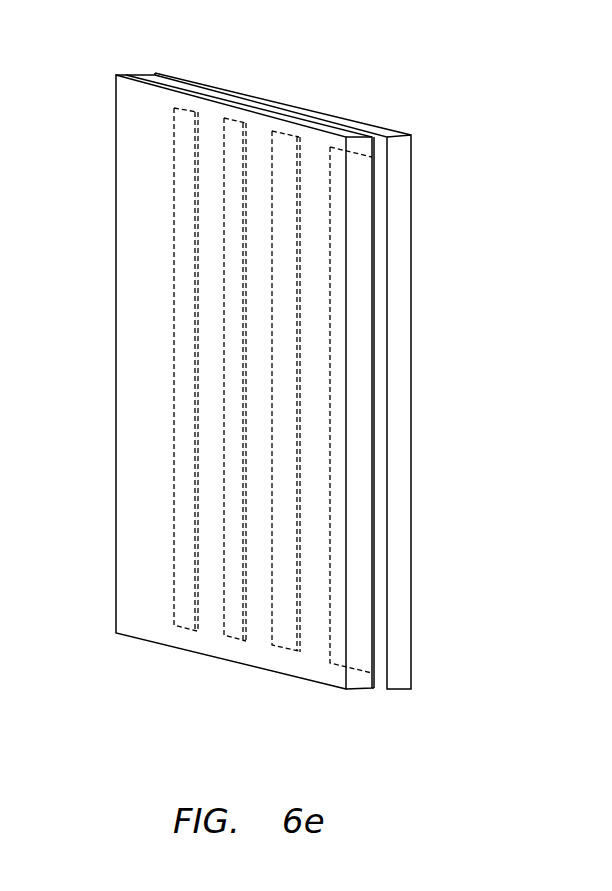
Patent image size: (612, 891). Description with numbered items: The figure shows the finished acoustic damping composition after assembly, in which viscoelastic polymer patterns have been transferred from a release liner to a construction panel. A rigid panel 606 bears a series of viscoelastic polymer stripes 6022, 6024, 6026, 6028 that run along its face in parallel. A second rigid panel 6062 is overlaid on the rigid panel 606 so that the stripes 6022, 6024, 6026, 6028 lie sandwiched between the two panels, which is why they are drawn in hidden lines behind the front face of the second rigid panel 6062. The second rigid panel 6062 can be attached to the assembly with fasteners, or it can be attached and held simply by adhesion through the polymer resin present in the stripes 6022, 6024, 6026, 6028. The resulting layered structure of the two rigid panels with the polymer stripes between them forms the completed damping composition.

The rigid panel 606 is at (400, 178).
The second rigid panel 6062 is at (130, 74).
The stripe 6022 is at (371, 662).
The stripe 6024 is at (288, 652).
The stripe 6026 is at (234, 643).
The stripe 6028 is at (175, 630).